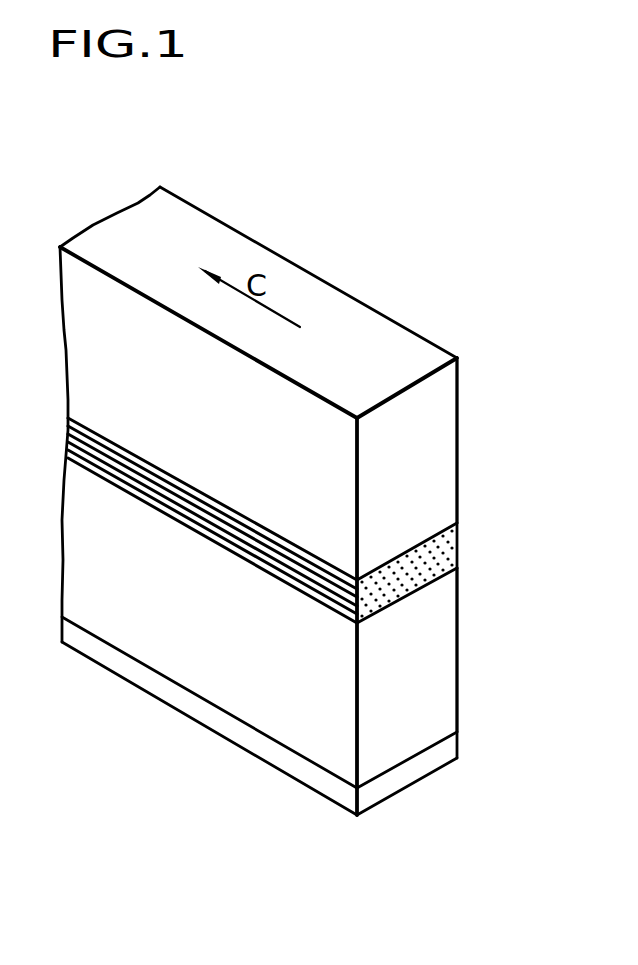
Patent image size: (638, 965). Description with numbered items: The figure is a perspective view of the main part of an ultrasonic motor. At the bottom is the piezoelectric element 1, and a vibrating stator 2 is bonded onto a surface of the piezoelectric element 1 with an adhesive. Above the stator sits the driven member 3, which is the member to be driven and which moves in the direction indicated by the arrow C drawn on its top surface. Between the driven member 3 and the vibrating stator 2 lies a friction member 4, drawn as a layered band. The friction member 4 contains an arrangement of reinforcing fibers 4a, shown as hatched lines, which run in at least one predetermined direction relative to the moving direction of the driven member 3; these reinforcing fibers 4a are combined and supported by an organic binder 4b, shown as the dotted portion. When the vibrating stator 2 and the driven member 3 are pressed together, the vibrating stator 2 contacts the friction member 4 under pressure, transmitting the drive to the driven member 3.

The piezoelectric element 1 is at (448, 752).
The vibrating stator 2 is at (443, 686).
The driven member 3 is at (440, 458).
The friction member 4 is at (430, 587).
The reinforcing fibers 4a is at (445, 540).
The organic binder 4b is at (453, 542).